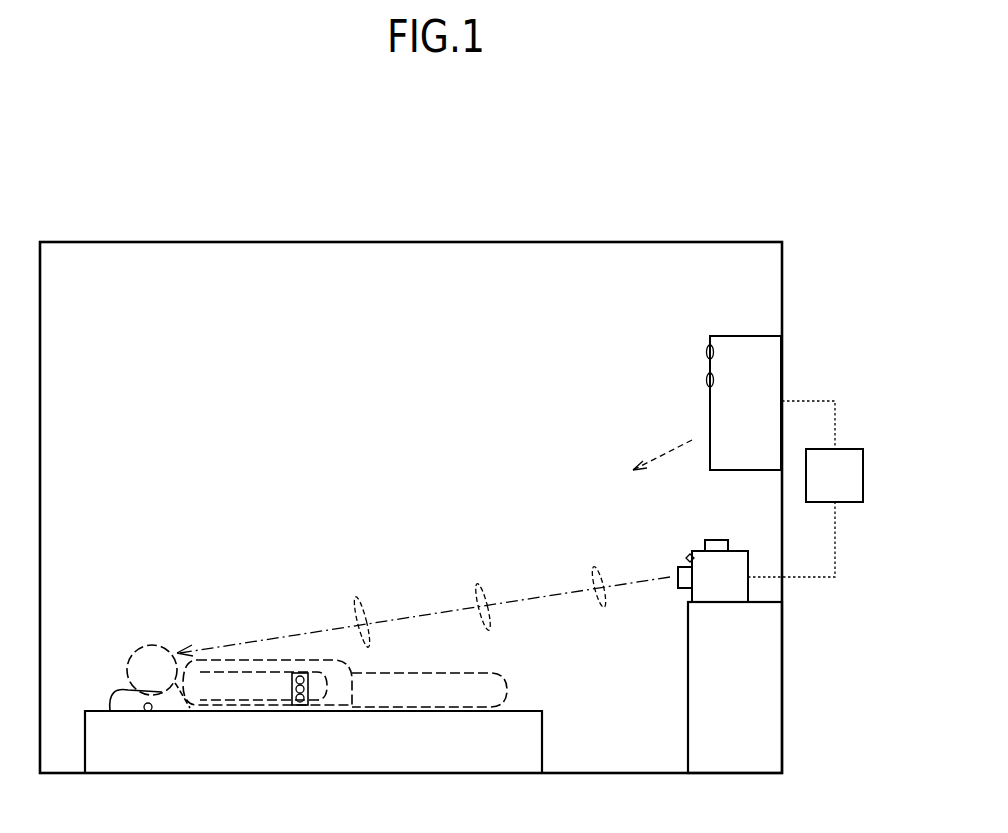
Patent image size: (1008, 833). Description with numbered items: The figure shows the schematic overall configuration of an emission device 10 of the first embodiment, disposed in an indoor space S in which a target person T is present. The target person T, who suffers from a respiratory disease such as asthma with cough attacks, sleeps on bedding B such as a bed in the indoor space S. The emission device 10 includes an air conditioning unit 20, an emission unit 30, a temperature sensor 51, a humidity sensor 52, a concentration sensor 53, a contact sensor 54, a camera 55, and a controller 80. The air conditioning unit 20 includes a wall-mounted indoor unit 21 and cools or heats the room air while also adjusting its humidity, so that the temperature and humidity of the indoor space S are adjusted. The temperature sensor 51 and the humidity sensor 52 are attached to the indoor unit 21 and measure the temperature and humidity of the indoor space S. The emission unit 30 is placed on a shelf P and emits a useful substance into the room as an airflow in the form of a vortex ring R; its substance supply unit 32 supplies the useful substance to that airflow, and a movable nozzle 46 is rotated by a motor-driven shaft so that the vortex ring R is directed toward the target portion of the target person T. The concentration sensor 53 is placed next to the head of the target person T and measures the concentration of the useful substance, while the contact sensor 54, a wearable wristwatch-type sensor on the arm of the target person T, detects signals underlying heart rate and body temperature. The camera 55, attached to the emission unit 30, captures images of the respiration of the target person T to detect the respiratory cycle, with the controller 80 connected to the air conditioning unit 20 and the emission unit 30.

The emission device 10 is at (812, 368).
The air conditioning unit 20 is at (747, 335).
The indoor unit 21 is at (729, 364).
The temperature sensor 51 is at (707, 350).
The humidity sensor 52 is at (707, 380).
The controller 80 is at (860, 449).
The emission unit 30 is at (736, 608).
The substance supply unit 32 is at (712, 540).
The movable nozzle 46 is at (683, 590).
The camera 55 is at (688, 557).
The concentration sensor 53 is at (148, 712).
The contact sensor 54 is at (291, 705).
The indoor space S is at (170, 389).
The target person T is at (152, 632).
The vortex ring R is at (353, 596).
The shelf P is at (685, 677).
The bedding B is at (545, 752).